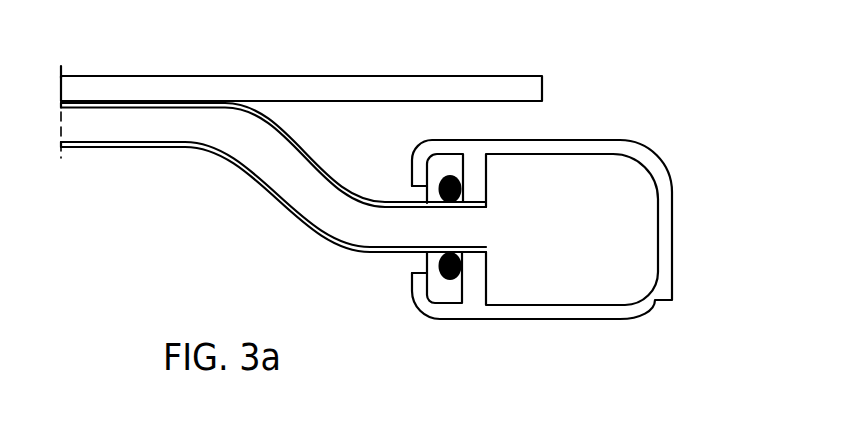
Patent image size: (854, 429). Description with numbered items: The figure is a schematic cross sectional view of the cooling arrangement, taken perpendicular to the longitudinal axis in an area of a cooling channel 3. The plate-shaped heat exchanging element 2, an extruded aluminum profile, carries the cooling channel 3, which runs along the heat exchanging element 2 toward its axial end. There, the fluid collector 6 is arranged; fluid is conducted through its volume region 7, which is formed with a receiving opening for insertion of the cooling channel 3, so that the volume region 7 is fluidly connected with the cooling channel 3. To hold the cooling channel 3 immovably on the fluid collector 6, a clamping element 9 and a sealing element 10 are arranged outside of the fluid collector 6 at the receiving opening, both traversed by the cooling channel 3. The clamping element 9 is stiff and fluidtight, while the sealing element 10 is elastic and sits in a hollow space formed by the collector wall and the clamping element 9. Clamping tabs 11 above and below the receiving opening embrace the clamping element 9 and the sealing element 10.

The heat exchanging element 2 is at (458, 90).
The cooling channel 3 is at (262, 155).
The fluid collector 6 is at (680, 199).
The volume region 7 is at (638, 256).
The clamping element 9 is at (445, 297).
The sealing element 10 is at (468, 290).
The clamping tab 11 is at (402, 184).